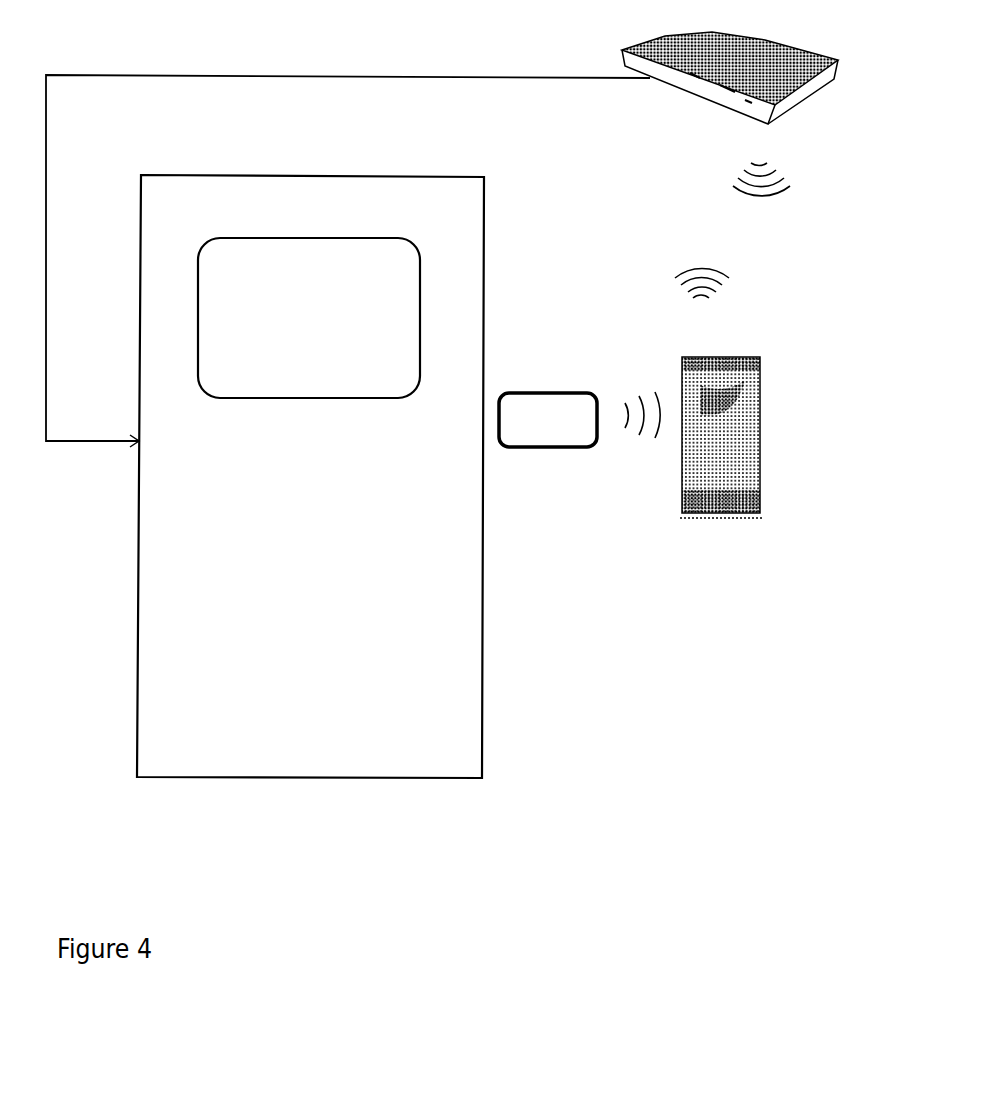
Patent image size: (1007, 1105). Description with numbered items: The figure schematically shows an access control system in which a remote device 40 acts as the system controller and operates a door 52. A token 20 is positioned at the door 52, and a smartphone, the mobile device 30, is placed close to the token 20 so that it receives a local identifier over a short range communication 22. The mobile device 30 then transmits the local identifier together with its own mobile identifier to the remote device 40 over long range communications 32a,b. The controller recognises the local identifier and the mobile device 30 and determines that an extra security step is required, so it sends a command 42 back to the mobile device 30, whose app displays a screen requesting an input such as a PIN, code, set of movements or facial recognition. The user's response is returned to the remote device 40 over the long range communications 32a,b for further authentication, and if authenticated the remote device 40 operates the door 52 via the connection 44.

The connection 44 is at (313, 70).
The remote device 40 is at (783, 43).
The command 42 is at (777, 173).
The long range communications 32a,b is at (722, 268).
The token 20 is at (527, 448).
The short range communication 22 is at (642, 438).
The mobile device 30 is at (762, 438).
The door 52 is at (482, 658).